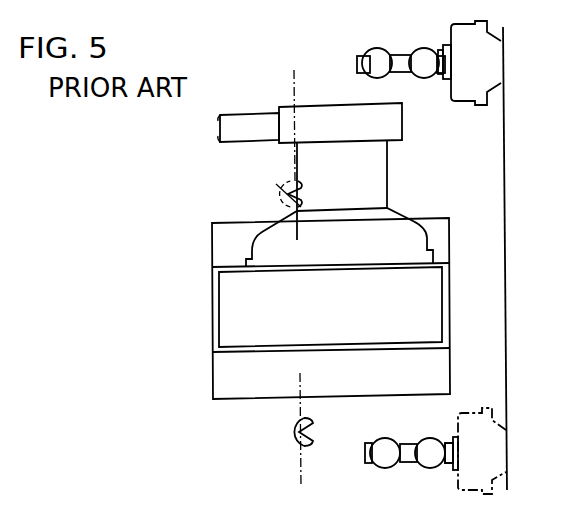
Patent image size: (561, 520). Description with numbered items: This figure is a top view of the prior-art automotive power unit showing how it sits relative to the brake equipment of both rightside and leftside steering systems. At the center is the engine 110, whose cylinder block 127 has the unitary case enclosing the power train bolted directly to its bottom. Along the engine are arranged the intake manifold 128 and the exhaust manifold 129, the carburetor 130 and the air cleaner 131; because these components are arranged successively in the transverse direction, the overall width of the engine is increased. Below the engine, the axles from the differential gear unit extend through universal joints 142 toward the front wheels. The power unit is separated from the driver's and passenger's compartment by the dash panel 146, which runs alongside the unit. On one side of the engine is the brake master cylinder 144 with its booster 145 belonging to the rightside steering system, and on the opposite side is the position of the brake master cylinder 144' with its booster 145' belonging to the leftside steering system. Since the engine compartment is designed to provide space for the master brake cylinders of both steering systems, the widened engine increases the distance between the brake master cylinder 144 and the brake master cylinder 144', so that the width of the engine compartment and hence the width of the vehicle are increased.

The engine 110 is at (212, 290).
The cylinder block 127 is at (450, 242).
The intake manifold 128 is at (362, 224).
The exhaust manifold 129 is at (396, 214).
The carburetor 130 is at (388, 157).
The air cleaner 131 is at (403, 124).
The universal joints 142 is at (274, 196).
The brake master cylinder 144 is at (381, 55).
The booster 145 is at (490, 62).
The dash panel 146 is at (505, 160).
The brake master cylinder 144' is at (409, 471).
The booster 145' is at (498, 460).